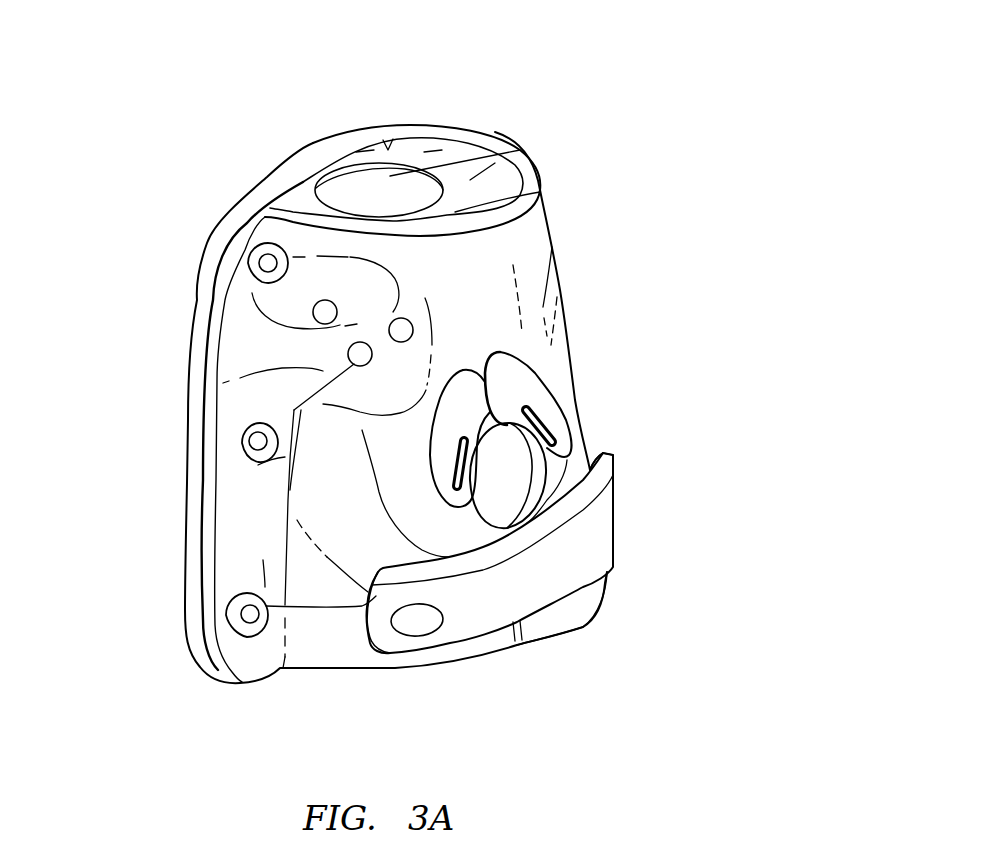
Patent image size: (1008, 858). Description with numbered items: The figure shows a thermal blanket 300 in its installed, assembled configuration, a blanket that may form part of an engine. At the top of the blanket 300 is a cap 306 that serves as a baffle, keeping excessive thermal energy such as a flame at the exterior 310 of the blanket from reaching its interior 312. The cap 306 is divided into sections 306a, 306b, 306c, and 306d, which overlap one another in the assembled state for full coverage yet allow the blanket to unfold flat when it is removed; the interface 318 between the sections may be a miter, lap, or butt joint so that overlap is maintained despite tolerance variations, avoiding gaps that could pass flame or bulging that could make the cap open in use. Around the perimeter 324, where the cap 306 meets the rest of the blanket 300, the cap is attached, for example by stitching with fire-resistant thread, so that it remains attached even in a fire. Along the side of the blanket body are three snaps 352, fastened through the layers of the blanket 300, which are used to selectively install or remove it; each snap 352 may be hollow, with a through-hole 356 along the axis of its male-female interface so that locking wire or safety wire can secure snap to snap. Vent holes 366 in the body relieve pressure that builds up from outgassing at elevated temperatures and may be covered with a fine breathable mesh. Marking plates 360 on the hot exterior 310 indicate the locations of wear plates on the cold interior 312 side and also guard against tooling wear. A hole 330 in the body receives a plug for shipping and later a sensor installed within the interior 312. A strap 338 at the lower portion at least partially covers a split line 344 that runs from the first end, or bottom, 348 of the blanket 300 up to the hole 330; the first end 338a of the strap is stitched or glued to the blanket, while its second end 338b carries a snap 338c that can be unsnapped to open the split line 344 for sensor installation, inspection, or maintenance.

The thermal blanket 300 is at (611, 85).
The exterior 310 is at (110, 316).
The cap 306 is at (329, 160).
The section 306a is at (365, 152).
The section 306b is at (433, 153).
The section 306c is at (482, 174).
The section 306d is at (540, 192).
The interface 318 is at (388, 175).
The perimeter 324 is at (530, 163).
The interior 312 is at (370, 198).
The snap 352 is at (262, 265).
The through-hole 356 is at (262, 252).
The vent hole 366 is at (326, 312).
The marking plate 360 is at (463, 403).
The hole 330 is at (505, 473).
The strap 338 is at (567, 550).
The first end 338a is at (613, 467).
The second end 338b is at (391, 640).
The snap 338c is at (424, 625).
The split line 344 is at (520, 642).
The first end 348 is at (563, 603).